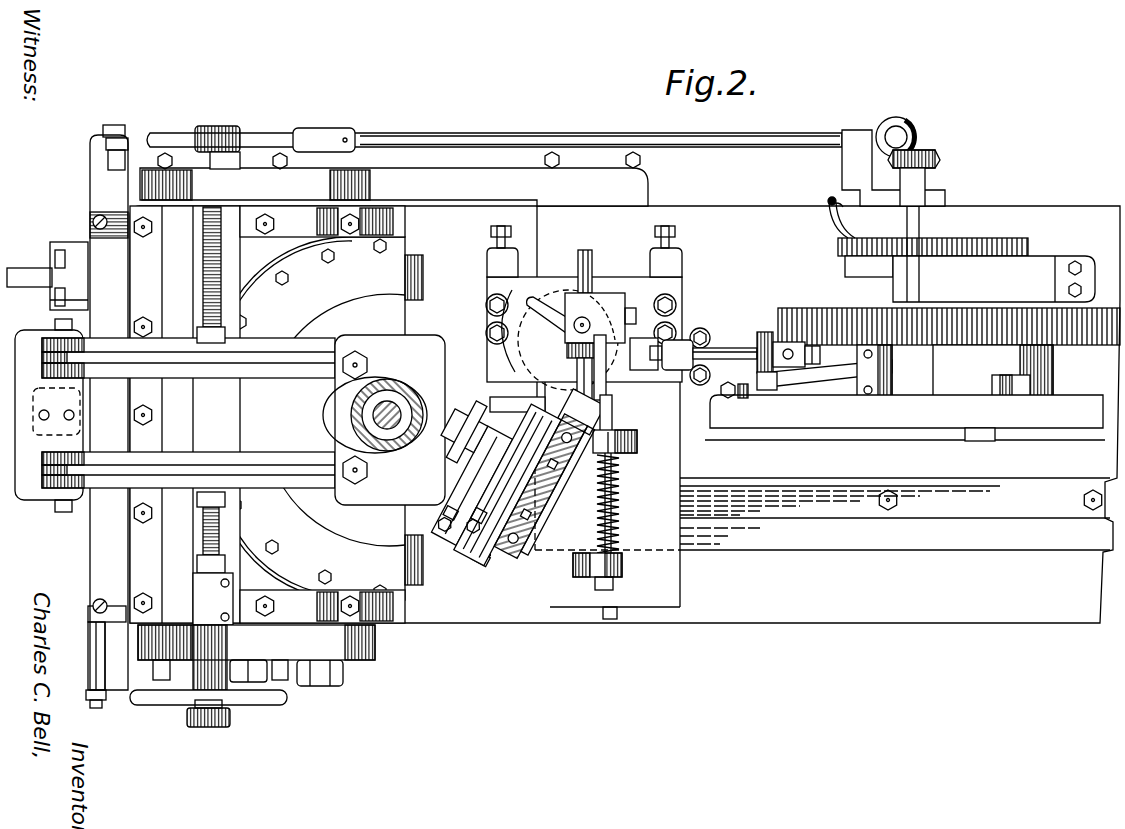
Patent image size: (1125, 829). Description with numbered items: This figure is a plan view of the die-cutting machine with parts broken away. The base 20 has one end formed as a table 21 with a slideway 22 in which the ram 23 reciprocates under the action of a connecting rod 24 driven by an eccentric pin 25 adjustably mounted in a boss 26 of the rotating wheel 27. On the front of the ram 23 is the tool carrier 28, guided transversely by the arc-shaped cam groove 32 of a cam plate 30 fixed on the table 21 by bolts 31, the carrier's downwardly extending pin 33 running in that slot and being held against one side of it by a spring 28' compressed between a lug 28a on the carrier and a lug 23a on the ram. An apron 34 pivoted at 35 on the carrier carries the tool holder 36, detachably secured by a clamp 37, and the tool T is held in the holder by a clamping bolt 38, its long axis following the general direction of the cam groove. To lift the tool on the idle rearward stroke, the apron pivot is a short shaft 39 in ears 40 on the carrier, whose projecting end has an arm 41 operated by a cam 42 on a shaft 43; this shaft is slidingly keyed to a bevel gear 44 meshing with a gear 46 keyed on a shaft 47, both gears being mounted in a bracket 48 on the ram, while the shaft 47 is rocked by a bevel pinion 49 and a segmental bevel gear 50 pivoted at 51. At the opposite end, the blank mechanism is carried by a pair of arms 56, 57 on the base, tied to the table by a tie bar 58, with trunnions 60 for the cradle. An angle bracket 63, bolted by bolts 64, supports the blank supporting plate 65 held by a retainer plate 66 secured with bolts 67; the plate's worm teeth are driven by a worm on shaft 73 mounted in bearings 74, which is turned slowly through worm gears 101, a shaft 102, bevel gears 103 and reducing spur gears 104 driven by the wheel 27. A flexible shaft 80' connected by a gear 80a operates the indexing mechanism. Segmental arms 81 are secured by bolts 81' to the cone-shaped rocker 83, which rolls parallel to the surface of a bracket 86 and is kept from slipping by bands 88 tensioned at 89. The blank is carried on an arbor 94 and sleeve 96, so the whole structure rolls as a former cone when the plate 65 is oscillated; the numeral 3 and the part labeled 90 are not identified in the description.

The base 20 is at (430, 608).
The table 21 is at (833, 533).
The slideway 22 is at (1007, 494).
The ram 23 is at (663, 563).
The lug on the ram 23a is at (598, 450).
The connecting rod 24 is at (880, 433).
The eccentric pin 25 is at (985, 442).
The boss 26 is at (1043, 388).
The rotating wheel 27 is at (1085, 327).
The tool carrier 28 is at (527, 587).
The spring 28' is at (633, 503).
The lug on the carrier 28a is at (600, 562).
The tool slide 3 is at (495, 446).
The cam plate 30 is at (545, 285).
The bolts 31 is at (685, 297).
The cam groove 32 is at (570, 300).
The pin 33 is at (565, 335).
The apron 34 is at (473, 533).
The pivot 35 is at (498, 544).
The tool holder 36 is at (470, 478).
The clamp 37 is at (447, 506).
The clamping bolt 38 is at (474, 432).
The short shaft 39 is at (615, 432).
The ears 40 is at (622, 450).
The arm 41 is at (598, 406).
The cam 42 is at (583, 410).
The shaft 43 is at (578, 383).
The bevel gear 44 is at (578, 356).
The bevel gear 46 is at (622, 345).
The shaft 47 is at (712, 348).
The bracket 48 is at (607, 300).
The bevel pinion 49 is at (765, 333).
The segmental bevel gear 50 is at (767, 380).
The pivot 51 is at (880, 372).
The arm 56 is at (332, 180).
The arm 57 is at (350, 662).
The tie bar 58 is at (480, 178).
The trunnions 60 is at (318, 166).
The bracket 63 is at (238, 558).
The bolts 64 is at (150, 598).
The blank supporting plate 65 is at (410, 296).
The retainer plate 66 is at (312, 537).
The bolts 67 is at (377, 592).
The shaft 73 is at (218, 261).
The bearings 74 is at (210, 599).
The flexible shaft 80' is at (809, 218).
The gear 80a is at (840, 250).
The segmental arms 81 is at (188, 413).
The bolts 81' is at (37, 525).
The rocker 83 is at (100, 513).
The bracket 86 is at (98, 160).
The bands 88 is at (97, 640).
The adjusting means 89 is at (88, 692).
The lever 90 is at (81, 252).
The arbor 94 is at (362, 436).
The sleeve 96 is at (340, 404).
The worm gears 101 is at (226, 128).
The shaft 102 is at (425, 134).
The bevel gears 103 is at (905, 124).
The reducing spur gears 104 is at (960, 237).
The tool T is at (458, 406).